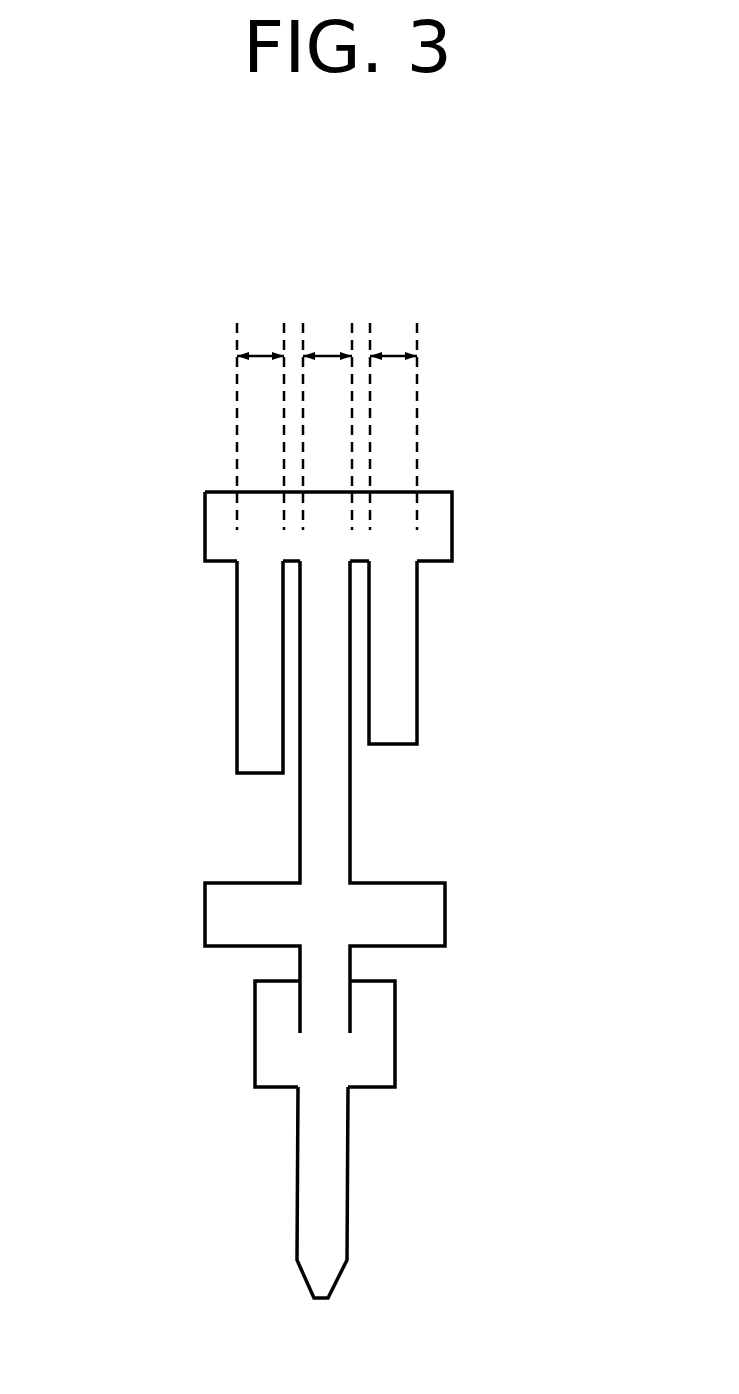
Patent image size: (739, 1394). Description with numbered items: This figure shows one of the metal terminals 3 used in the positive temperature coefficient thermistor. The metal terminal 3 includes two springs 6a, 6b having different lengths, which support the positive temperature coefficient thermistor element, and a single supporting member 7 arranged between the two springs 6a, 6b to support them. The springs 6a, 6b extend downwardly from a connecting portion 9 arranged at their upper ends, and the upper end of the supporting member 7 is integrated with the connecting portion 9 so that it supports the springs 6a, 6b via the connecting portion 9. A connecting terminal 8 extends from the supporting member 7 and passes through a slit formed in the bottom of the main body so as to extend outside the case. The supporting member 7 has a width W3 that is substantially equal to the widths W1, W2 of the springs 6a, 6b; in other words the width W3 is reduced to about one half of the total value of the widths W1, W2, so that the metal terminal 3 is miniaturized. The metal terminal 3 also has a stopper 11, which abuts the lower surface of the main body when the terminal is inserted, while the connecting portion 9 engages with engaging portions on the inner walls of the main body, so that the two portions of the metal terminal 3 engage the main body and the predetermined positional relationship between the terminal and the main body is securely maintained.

The metal terminal 3 is at (337, 852).
The connecting portion 9 is at (433, 490).
The spring 6a is at (237, 667).
The spring 6b is at (418, 653).
The supporting member 7 is at (351, 812).
The stopper 11 is at (396, 1033).
The connecting terminal 8 is at (348, 1175).
The width of spring W1 is at (262, 356).
The width of spring W2 is at (393, 356).
The width of supporting member W3 is at (329, 356).